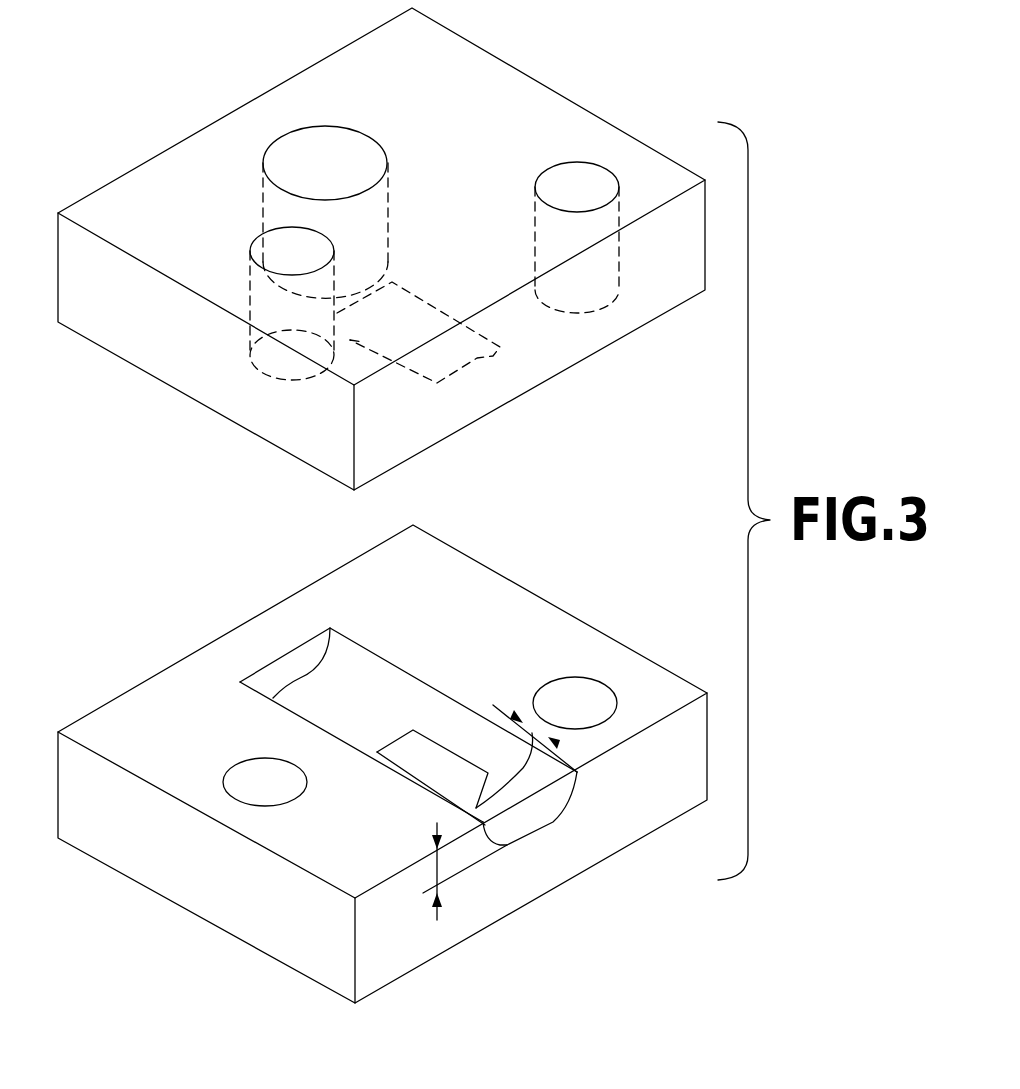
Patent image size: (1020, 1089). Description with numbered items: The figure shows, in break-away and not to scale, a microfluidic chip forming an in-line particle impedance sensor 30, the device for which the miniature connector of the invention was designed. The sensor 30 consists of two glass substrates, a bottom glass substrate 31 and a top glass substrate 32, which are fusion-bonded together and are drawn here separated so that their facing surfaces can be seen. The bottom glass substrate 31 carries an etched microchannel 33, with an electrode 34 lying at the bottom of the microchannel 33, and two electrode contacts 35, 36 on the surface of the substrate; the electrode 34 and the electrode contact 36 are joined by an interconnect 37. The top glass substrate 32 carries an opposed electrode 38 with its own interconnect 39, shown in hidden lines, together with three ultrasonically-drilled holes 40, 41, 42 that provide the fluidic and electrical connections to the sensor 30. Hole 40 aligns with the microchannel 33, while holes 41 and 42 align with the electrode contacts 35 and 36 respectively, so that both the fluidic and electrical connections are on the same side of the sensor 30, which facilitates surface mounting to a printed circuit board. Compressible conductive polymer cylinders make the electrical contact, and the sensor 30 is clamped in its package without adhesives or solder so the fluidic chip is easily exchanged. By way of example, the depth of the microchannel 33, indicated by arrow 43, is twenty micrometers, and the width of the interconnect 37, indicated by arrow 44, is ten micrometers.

The in-line particle impedance sensor 30 is at (140, 131).
The bottom glass substrate 31 is at (503, 602).
The top glass substrate 32 is at (513, 83).
The microchannel 33 is at (397, 687).
The electrode 34 is at (437, 762).
The electrode contact 35 is at (243, 770).
The electrode contact 36 is at (593, 702).
The interconnect 37 is at (513, 760).
The opposed electrode 38 is at (477, 358).
The interconnect 39 is at (352, 338).
The hole 40 is at (335, 153).
The hole 41 is at (285, 238).
The hole 42 is at (585, 182).
The arrow 43 is at (427, 877).
The arrow 44 is at (532, 730).